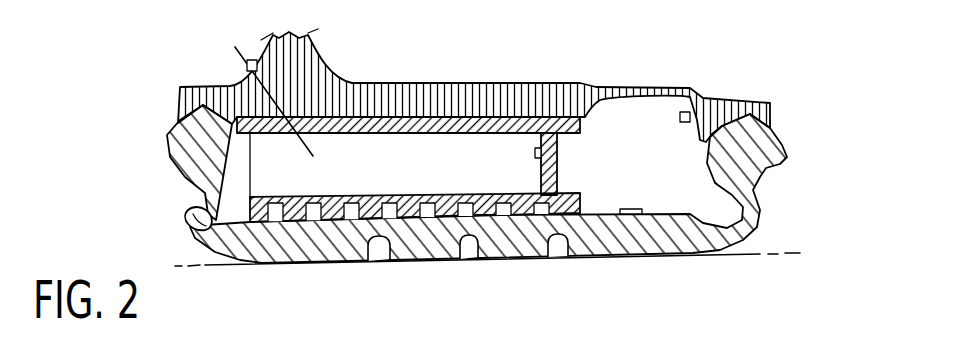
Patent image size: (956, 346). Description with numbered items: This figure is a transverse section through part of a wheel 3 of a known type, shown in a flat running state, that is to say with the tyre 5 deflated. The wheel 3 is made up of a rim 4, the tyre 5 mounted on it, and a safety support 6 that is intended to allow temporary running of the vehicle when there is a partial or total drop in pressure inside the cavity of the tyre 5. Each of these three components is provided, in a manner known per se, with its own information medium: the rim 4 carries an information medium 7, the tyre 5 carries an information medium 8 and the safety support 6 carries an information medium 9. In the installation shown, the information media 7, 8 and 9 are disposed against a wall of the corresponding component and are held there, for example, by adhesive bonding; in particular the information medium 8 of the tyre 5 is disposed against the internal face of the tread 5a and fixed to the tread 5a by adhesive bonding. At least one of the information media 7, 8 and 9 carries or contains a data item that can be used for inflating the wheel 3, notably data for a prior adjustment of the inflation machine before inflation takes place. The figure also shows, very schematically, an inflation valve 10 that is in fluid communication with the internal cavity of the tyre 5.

The wheel 3 is at (474, 74).
The rim 4 is at (463, 104).
The tyre 5 is at (462, 214).
The tread 5a is at (334, 263).
The safety support 6 is at (423, 169).
The information medium 7 is at (689, 118).
The information medium 8 is at (631, 209).
The information medium 9 is at (535, 153).
The inflation valve 10 is at (247, 66).